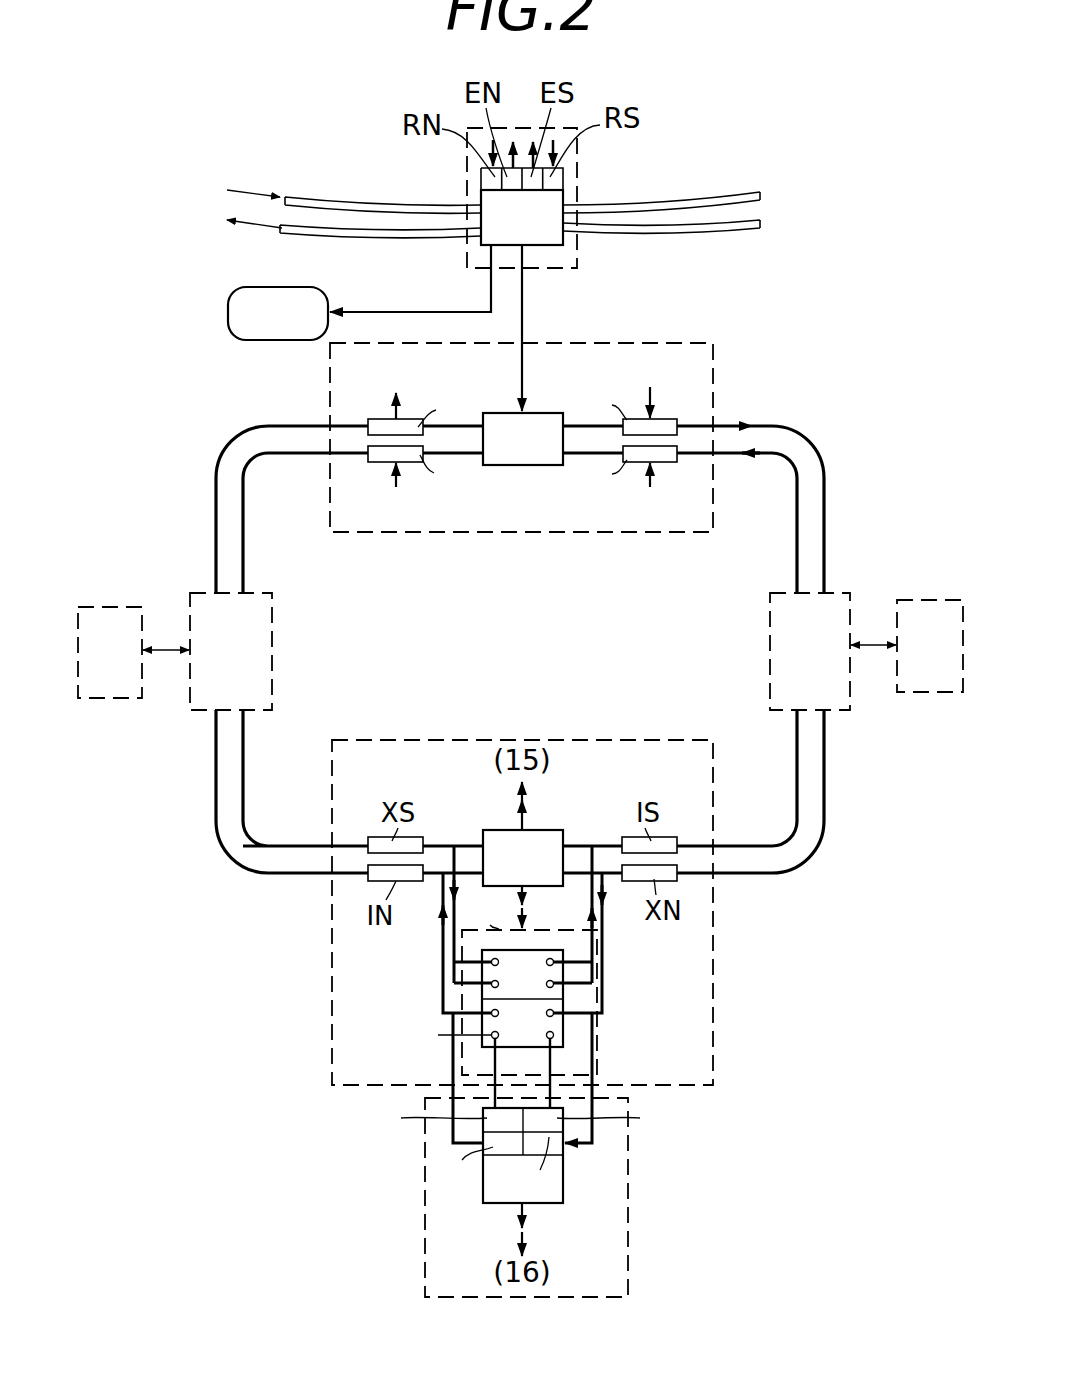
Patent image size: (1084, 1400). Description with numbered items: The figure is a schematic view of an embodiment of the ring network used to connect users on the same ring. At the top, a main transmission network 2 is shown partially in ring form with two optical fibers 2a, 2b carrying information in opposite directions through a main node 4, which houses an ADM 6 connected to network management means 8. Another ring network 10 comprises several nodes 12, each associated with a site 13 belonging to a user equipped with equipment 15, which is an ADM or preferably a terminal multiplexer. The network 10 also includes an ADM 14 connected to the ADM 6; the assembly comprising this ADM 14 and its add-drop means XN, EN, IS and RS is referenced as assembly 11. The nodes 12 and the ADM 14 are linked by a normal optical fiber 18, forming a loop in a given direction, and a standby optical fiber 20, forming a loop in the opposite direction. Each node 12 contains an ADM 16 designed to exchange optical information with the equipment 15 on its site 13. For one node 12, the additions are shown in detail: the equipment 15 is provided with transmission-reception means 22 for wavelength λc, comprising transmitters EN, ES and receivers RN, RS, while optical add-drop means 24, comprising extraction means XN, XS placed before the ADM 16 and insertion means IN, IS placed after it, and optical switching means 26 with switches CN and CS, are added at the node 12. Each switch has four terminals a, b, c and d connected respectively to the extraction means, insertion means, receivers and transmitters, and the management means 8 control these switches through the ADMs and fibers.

The main transmission network 2 is at (493, 198).
The optical fiber 2a is at (308, 197).
The optical fiber 2b is at (368, 234).
The main node 4 is at (545, 217).
The ADM 6 is at (551, 233).
The network management means 8 is at (245, 313).
The ring network 10 is at (548, 594).
The assembly 11 is at (521, 465).
The node 12 is at (272, 643).
The site 13 is at (118, 608).
The ADM 14 is at (525, 450).
The equipment 15 is at (485, 1183).
The ADM 16 is at (545, 838).
The normal optical fiber 18 is at (758, 423).
The standby optical fiber 20 is at (787, 460).
The transmission-reception means 22 is at (577, 1152).
The optical add-drop means 24 is at (428, 828).
The optical switching means 26 is at (597, 1058).